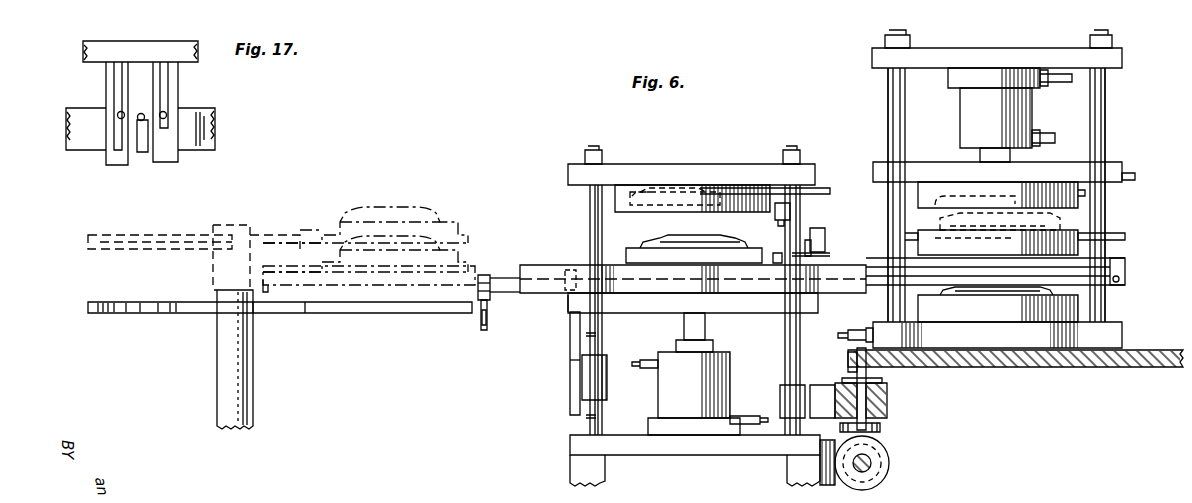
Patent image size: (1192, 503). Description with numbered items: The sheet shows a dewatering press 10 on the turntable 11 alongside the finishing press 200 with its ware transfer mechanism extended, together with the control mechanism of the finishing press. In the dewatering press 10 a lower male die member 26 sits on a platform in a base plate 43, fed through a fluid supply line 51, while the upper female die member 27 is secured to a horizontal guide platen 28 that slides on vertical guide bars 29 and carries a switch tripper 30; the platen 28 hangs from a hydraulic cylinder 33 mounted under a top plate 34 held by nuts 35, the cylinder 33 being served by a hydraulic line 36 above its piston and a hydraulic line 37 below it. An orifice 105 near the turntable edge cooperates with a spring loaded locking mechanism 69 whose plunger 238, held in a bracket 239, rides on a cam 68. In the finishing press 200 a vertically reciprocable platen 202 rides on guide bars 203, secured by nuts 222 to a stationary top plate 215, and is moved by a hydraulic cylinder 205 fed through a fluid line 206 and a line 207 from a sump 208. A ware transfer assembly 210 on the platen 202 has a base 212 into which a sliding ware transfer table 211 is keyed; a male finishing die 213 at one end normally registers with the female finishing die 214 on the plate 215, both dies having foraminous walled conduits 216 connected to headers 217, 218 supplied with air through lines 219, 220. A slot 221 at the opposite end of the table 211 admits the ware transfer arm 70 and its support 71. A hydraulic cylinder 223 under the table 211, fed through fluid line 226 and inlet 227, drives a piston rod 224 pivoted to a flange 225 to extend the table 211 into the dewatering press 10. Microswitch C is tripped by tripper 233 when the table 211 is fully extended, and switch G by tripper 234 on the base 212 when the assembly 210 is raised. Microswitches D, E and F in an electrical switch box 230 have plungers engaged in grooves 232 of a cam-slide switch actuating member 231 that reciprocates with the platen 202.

In FIG. 17, the vertically reciprocable platen 202 is at (151, 48).
In FIG. 6, the vertically reciprocable platen 202 is at (568, 306).
In FIG. 17, the cam-slide switch actuating member 231 is at (118, 163).
In FIG. 6, the cam-slide switch actuating member 231 is at (570, 396).
In FIG. 17, the electrical switch box 230 is at (98, 143).
In FIG. 6, the electrical switch box 230 is at (600, 368).
In FIG. 17, the grooves 232 is at (145, 163).
In FIG. 17, the microswitch D is at (117, 112).
In FIG. 17, the microswitch E is at (141, 113).
In FIG. 17, the microswitch F is at (167, 112).
In FIG. 6, the microswitch F is at (570, 372).
In FIG. 6, the ware transfer arm 70 is at (158, 235).
In FIG. 6, the conveyor column 71 is at (232, 226).
In FIG. 6, the slot 221 is at (415, 278).
In FIG. 6, the sliding ware transfer table 211 is at (480, 262).
In FIG. 6, the hydraulic cylinder 223 is at (480, 296).
In FIG. 6, the inlet 227 is at (490, 300).
In FIG. 6, the fluid line 226 is at (482, 326).
In FIG. 6, the finishing press 200 is at (711, 156).
In FIG. 6, the nuts 222 is at (600, 153).
In FIG. 6, the stationary top plate 215 is at (756, 168).
In FIG. 6, the guide bars 203 is at (590, 226).
In FIG. 6, the female finishing die 214 is at (615, 200).
In FIG. 6, the header 218 is at (680, 190).
In FIG. 6, the foraminous walled conduits 216 is at (641, 213).
In FIG. 6, the line 220 is at (826, 188).
In FIG. 6, the switch G is at (792, 210).
In FIG. 6, the microswitch C is at (827, 240).
In FIG. 6, the tripper 233 is at (815, 258).
In FIG. 6, the tripper 234 is at (775, 253).
In FIG. 6, the ware transfer assembly 210 is at (553, 258).
In FIG. 6, the base 212 is at (742, 296).
In FIG. 6, the hydraulic cylinder 205 is at (686, 404).
In FIG. 6, the fluid line 206 is at (646, 368).
In FIG. 6, the line 207 is at (756, 428).
In FIG. 6, the sump 208 is at (576, 466).
In FIG. 6, the dewatering press 10 is at (878, 106).
In FIG. 6, the top plate 34 is at (1012, 48).
In FIG. 6, the nuts 35 is at (1110, 44).
In FIG. 6, the horizontal guide platen 28 is at (882, 165).
In FIG. 6, the vertical guide bars 29 is at (1106, 128).
In FIG. 6, the hydraulic cylinder 33 is at (966, 106).
In FIG. 6, the hydraulic line 36 is at (1056, 83).
In FIG. 6, the hydraulic line 37 is at (1043, 136).
In FIG. 6, the upper female die member 27 is at (1035, 184).
In FIG. 6, the switch tripper 30 is at (1132, 174).
In FIG. 6, the male finishing die 213 is at (918, 202).
In FIG. 6, the header 217 is at (998, 240).
In FIG. 6, the line 219 is at (1120, 235).
In FIG. 6, the flange 225 is at (1124, 280).
In FIG. 6, the piston rod 224 is at (1075, 290).
In FIG. 6, the lower male die member 26 is at (1070, 308).
In FIG. 6, the base plate 43 is at (1035, 346).
In FIG. 6, the turntable 11 is at (1100, 368).
In FIG. 6, the fluid supply line 51 is at (854, 329).
In FIG. 6, the orifice 105 is at (849, 364).
In FIG. 6, the spring loaded plunger 238 is at (868, 378).
In FIG. 6, the spring loaded locking mechanism 69 is at (900, 408).
In FIG. 6, the bracket 239 is at (882, 421).
In FIG. 6, the cam 68 is at (890, 460).